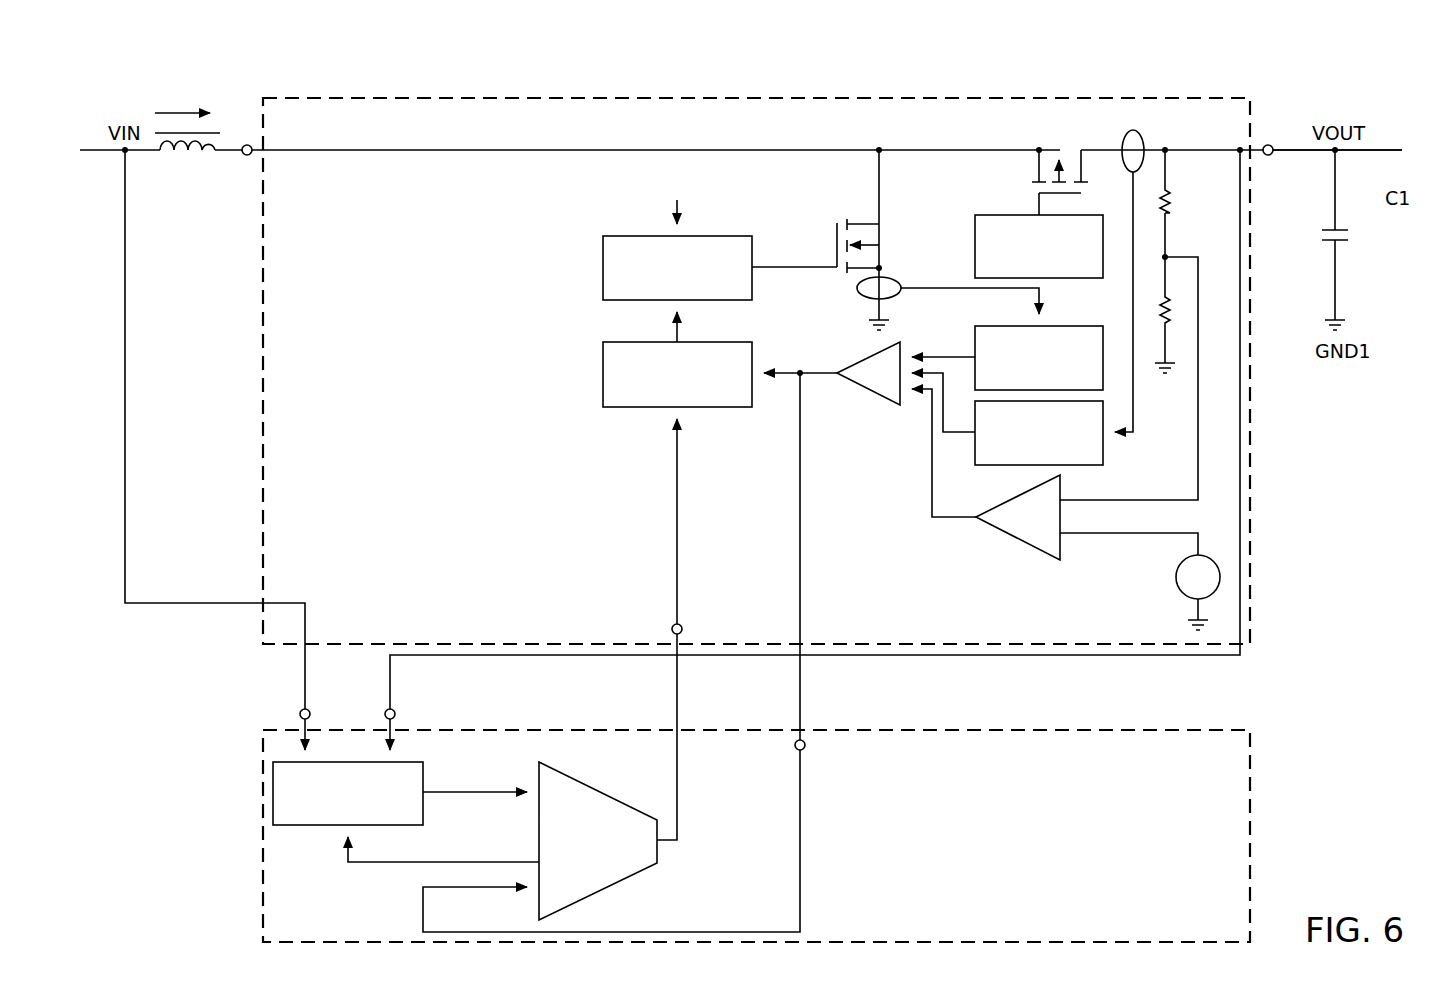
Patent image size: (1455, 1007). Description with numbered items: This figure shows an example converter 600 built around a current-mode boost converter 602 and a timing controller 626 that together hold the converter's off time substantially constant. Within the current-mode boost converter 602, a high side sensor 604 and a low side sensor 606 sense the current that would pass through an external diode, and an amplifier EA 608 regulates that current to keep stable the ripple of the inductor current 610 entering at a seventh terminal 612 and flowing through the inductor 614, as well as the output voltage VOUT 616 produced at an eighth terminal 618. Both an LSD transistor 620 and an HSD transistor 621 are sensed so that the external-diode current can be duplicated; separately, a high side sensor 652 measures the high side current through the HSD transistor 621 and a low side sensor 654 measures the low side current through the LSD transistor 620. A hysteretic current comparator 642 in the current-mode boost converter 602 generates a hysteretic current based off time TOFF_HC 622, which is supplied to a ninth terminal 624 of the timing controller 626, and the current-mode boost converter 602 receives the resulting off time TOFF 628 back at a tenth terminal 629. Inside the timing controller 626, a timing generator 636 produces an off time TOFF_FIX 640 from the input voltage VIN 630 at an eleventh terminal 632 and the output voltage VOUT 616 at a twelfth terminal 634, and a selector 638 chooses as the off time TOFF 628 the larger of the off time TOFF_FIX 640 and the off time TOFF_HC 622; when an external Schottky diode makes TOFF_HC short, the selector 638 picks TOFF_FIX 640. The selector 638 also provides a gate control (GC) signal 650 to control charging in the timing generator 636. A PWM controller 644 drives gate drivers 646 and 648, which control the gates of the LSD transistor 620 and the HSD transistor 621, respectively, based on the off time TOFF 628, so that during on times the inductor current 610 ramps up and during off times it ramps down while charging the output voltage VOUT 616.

The converter 600 is at (1405, 108).
The current-mode boost converter 602 is at (258, 305).
The high side sensor 604 is at (990, 325).
The low side sensor 606 is at (1104, 450).
The amplifier EA 608 is at (1015, 540).
The inductor current 610 is at (185, 110).
The seventh terminal 612 is at (245, 157).
The inductor L1 614 is at (178, 160).
The output voltage VOUT 616 is at (1218, 654).
The eighth terminal 618 is at (1272, 157).
The LSD transistor 620 is at (1038, 205).
The HSD transistor 621 is at (836, 240).
The hysteretic current based off time TOFF_HC 622 is at (745, 930).
The ninth terminal 624 is at (805, 746).
The timing controller 626 is at (258, 890).
The off time TOFF 628 is at (676, 534).
The tenth terminal 629 is at (672, 627).
The input voltage VIN 630 is at (304, 680).
The eleventh terminal 632 is at (1348, 237).
The twelfth terminal 634 is at (396, 712).
The timing generator 636 is at (310, 826).
The selector 638 is at (661, 863).
The off time TOFF_FIX 640 is at (472, 794).
The hysteretic current comparator 642 is at (870, 400).
The PWM controller 644 is at (602, 364).
The gate driver 646 is at (602, 255).
The gate driver 648 is at (974, 246).
The gate control (GC) signal 650 is at (380, 864).
The high side sensor 652 is at (856, 290).
The low side sensor 654 is at (1122, 135).